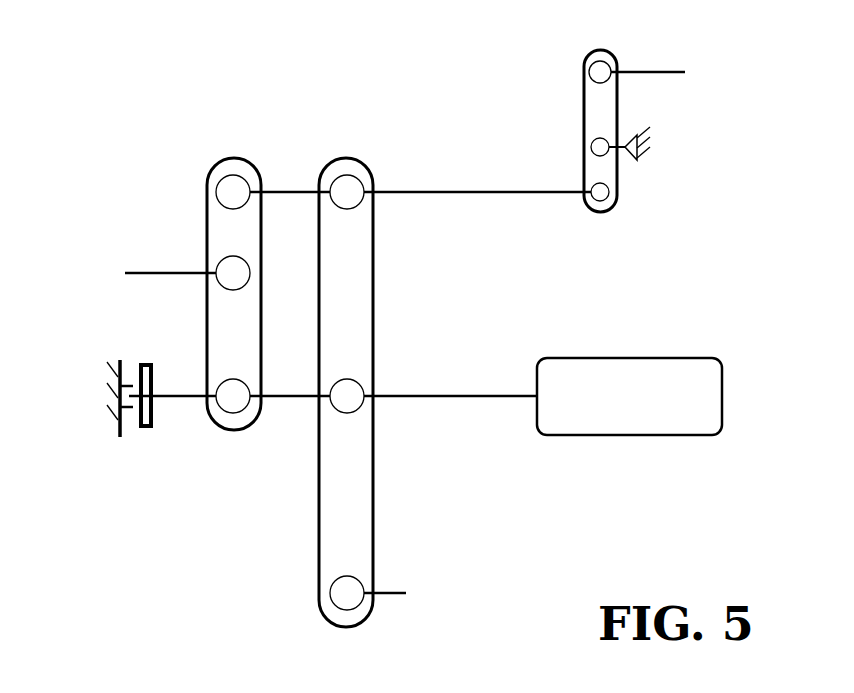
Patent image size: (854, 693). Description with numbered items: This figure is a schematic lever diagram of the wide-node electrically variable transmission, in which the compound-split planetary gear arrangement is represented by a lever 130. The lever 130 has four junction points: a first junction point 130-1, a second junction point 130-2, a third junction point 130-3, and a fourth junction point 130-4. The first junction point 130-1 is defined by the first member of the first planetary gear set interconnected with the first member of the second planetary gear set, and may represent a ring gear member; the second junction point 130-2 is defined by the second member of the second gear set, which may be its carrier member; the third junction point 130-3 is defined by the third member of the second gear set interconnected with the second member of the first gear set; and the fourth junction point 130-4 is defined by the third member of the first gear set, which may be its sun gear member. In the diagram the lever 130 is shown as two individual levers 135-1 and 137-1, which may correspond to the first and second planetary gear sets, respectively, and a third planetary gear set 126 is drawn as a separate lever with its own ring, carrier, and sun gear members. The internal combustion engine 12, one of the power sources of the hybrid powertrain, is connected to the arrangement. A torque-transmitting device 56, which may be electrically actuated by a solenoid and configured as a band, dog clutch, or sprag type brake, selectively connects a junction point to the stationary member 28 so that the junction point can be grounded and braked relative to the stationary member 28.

The internal combustion engine 12 is at (648, 358).
The stationary member 28 is at (629, 134).
The torque-transmitting device 56 is at (150, 428).
The third planetary gear set 126 is at (636, 188).
The lever 130 is at (133, 251).
The first junction point 130-1 is at (347, 185).
The second junction point 130-2 is at (250, 283).
The third junction point 130-3 is at (290, 400).
The fourth junction point 130-4 is at (347, 585).
The lever 135-1 is at (335, 140).
The lever 137-1 is at (200, 188).